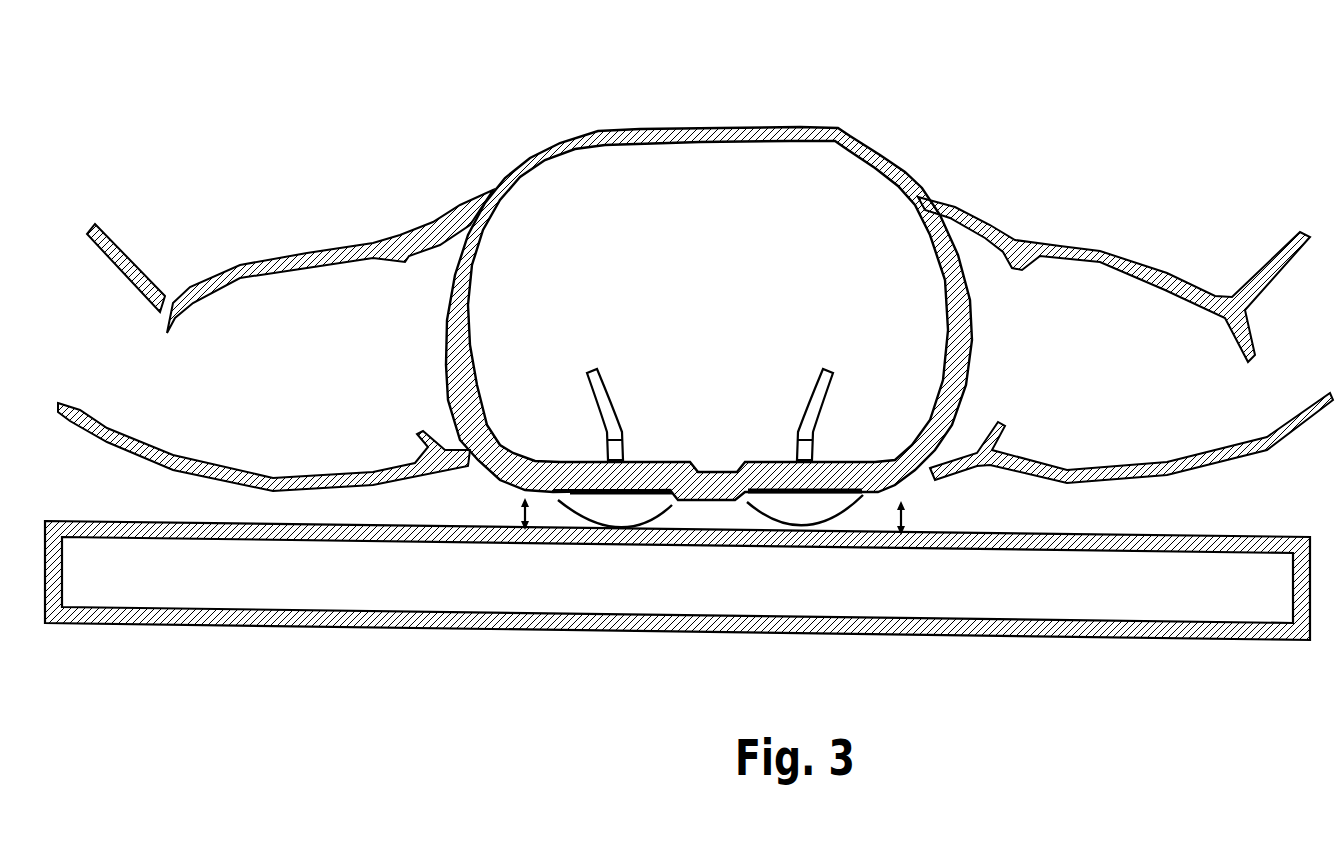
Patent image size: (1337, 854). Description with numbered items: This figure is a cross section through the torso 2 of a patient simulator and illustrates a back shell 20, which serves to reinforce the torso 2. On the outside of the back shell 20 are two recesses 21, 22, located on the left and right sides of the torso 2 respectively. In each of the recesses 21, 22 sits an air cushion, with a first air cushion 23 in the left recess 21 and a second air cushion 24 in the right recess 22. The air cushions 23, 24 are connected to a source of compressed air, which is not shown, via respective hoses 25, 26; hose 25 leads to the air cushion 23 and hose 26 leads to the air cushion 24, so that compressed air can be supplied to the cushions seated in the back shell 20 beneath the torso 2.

The torso 2 is at (747, 87).
The back shell 20 is at (460, 473).
The recess 21 is at (555, 460).
The recess 22 is at (853, 457).
The air cushion 23 is at (597, 493).
The air cushion 24 is at (820, 500).
The hose 25 is at (620, 402).
The hose 26 is at (793, 407).